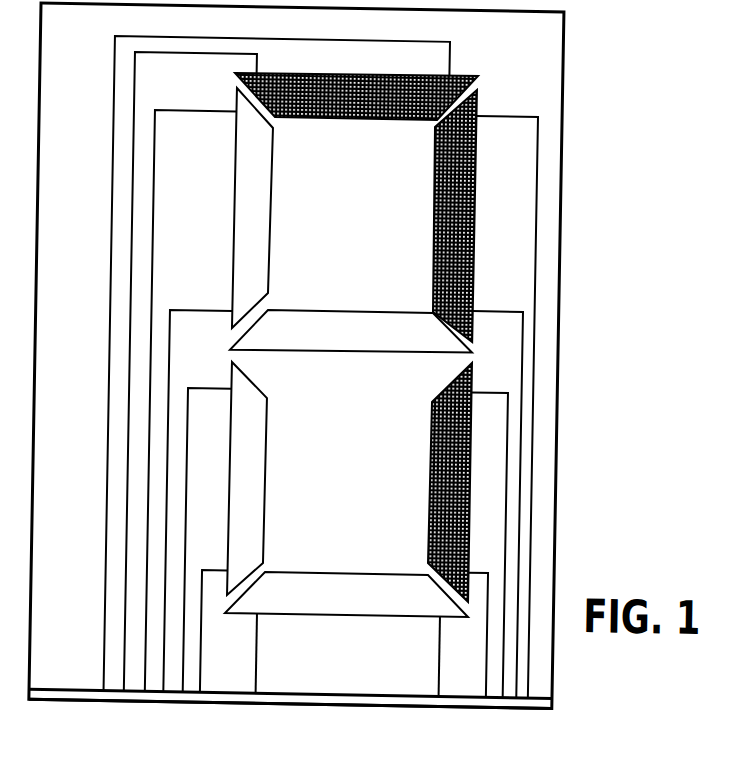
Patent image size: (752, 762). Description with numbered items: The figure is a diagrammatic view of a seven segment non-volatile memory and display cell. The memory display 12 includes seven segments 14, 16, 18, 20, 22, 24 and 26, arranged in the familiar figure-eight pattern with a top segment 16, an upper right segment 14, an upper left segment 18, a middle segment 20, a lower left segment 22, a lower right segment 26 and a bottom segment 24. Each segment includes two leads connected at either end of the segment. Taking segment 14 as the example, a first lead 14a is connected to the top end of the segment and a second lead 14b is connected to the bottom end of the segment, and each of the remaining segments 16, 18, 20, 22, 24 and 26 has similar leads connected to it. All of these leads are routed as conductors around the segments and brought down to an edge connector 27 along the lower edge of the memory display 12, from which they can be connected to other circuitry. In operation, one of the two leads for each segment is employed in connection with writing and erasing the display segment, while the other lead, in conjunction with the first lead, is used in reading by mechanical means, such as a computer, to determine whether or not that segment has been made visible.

The memory display 12 is at (624, 252).
The segment 14 is at (432, 200).
The first lead 14a is at (534, 113).
The second lead 14b is at (522, 308).
The segment 16 is at (468, 72).
The segment 18 is at (239, 231).
The segment 20 is at (384, 351).
The segment 22 is at (268, 460).
The segment 24 is at (360, 572).
The segment 26 is at (432, 458).
The edge connector 27 is at (541, 703).